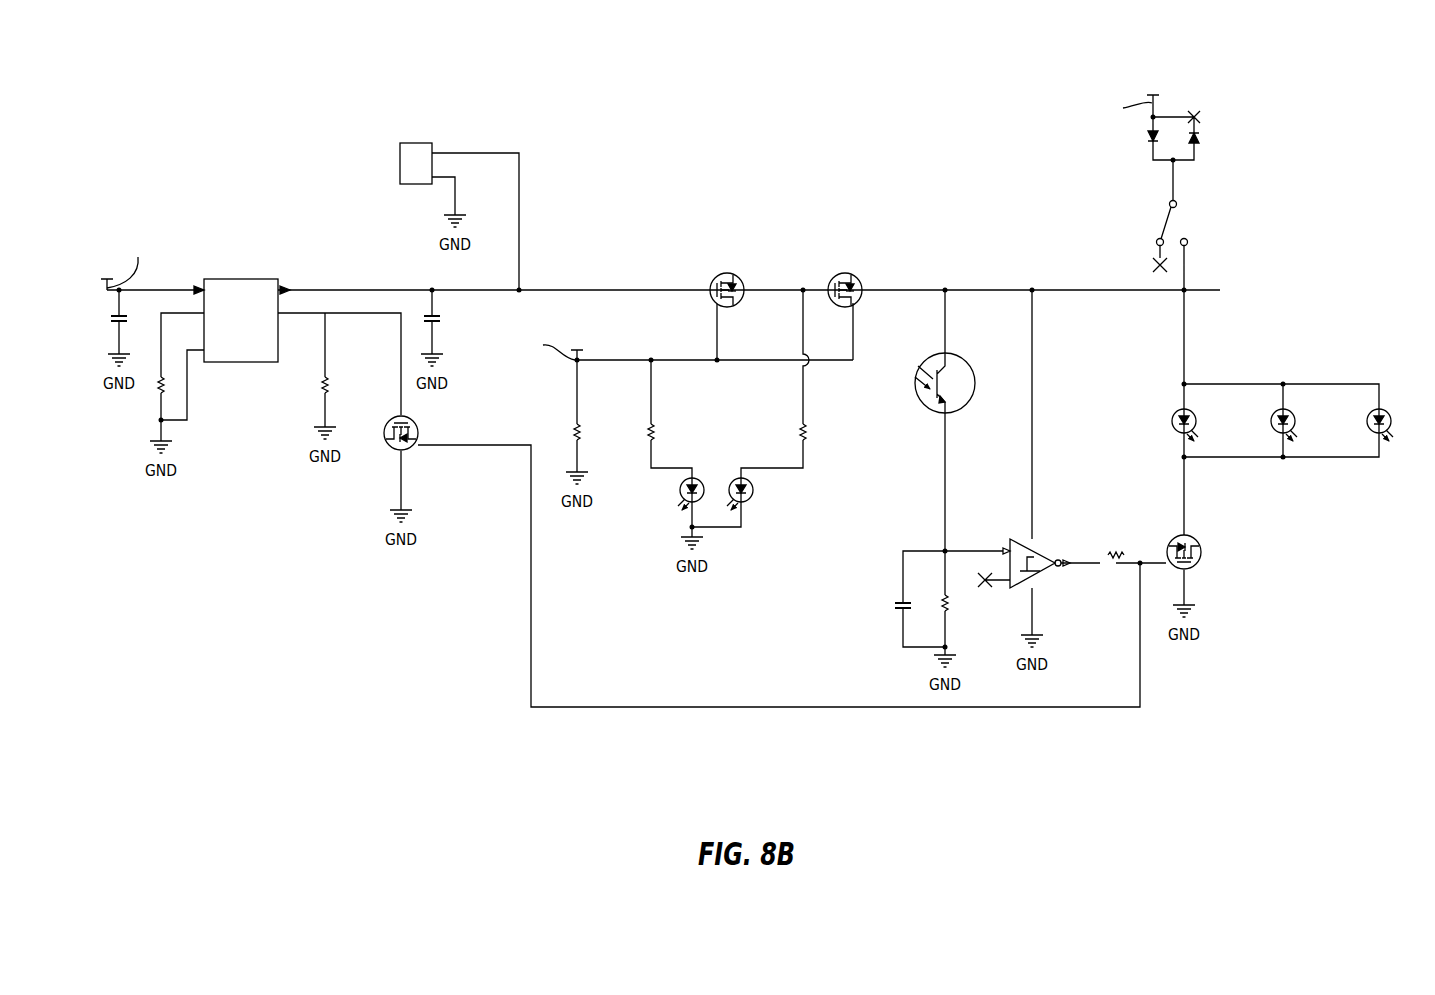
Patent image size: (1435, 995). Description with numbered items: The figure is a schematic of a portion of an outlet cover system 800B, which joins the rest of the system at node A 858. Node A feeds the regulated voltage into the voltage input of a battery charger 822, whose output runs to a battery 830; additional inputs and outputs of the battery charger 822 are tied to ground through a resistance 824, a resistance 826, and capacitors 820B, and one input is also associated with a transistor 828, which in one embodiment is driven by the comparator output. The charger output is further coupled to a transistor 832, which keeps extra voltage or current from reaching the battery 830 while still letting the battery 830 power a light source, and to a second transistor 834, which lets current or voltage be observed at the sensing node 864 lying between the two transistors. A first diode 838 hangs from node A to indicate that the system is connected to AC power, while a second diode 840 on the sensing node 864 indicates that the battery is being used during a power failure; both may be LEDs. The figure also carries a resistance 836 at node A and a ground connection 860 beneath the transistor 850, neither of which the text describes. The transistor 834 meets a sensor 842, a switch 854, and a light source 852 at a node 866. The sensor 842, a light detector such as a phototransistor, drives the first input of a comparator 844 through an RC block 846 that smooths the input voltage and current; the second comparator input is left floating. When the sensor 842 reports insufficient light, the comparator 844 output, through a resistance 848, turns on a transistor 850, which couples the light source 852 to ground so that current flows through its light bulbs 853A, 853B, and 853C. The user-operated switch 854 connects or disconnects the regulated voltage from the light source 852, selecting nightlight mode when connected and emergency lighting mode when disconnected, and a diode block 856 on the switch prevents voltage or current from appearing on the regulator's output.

The outlet cover system 800B is at (202, 98).
The capacitors 820B is at (133, 315).
The battery charger 822 is at (259, 279).
The resistance 824 is at (196, 431).
The resistance 826 is at (351, 340).
The transistor 828 is at (416, 456).
The battery 830 is at (431, 143).
The transistor 832 is at (725, 274).
The second transistor 834 is at (845, 274).
The resistor 836 is at (564, 431).
The first diode 838 is at (644, 507).
The second diode 840 is at (783, 523).
The sensor 842 is at (932, 437).
The comparator 844 is at (1049, 537).
The RC block 846 is at (874, 611).
The resistance 848 is at (1108, 553).
The transistor 850 is at (1188, 535).
The light source 852 is at (1238, 412).
The light bulb 853A is at (1206, 422).
The light bulb 853B is at (1306, 422).
The light bulb 853C is at (1396, 453).
The switch 854 is at (1228, 221).
The diode block 856 is at (1241, 92).
The node A 858 is at (1101, 88).
The ground 860 is at (1203, 654).
The sensing node 864 is at (532, 278).
The node 866 is at (941, 280).